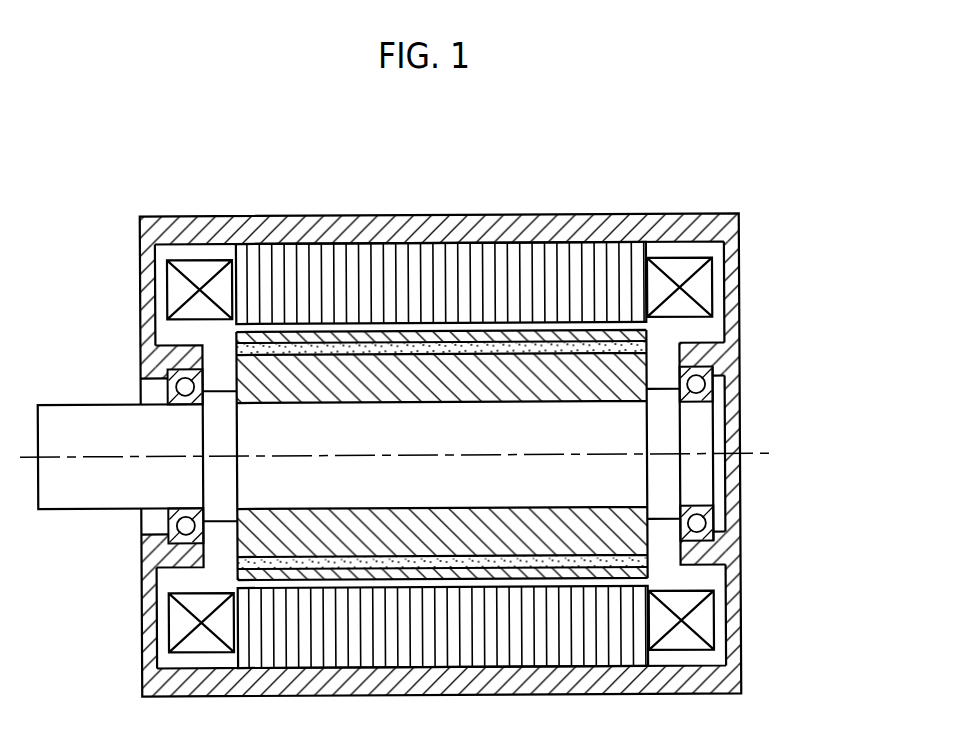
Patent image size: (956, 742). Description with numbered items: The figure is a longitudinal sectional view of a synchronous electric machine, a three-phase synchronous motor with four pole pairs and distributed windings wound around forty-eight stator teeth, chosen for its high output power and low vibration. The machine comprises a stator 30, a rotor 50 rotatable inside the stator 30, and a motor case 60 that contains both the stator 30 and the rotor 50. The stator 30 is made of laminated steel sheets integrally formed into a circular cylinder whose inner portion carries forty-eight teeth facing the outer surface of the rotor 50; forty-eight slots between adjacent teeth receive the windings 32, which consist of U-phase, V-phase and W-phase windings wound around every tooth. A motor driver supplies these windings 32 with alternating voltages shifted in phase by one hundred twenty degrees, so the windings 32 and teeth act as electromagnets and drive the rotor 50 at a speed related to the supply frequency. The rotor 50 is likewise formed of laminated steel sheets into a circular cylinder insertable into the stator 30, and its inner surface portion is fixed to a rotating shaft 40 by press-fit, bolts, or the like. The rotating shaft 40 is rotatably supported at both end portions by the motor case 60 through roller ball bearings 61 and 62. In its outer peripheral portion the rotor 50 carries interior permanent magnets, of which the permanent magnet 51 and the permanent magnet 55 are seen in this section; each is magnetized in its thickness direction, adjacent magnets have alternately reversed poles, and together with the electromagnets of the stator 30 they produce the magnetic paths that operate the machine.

The stator 30 is at (415, 238).
The windings 32 is at (698, 286).
The rotating shaft 40 is at (88, 485).
The rotor 50 is at (517, 426).
The interior permanent magnet 51 is at (428, 346).
The interior permanent magnet 55 is at (433, 565).
The motor case 60 is at (152, 270).
The roller ball bearing 61 is at (150, 360).
The roller ball bearing 62 is at (713, 361).